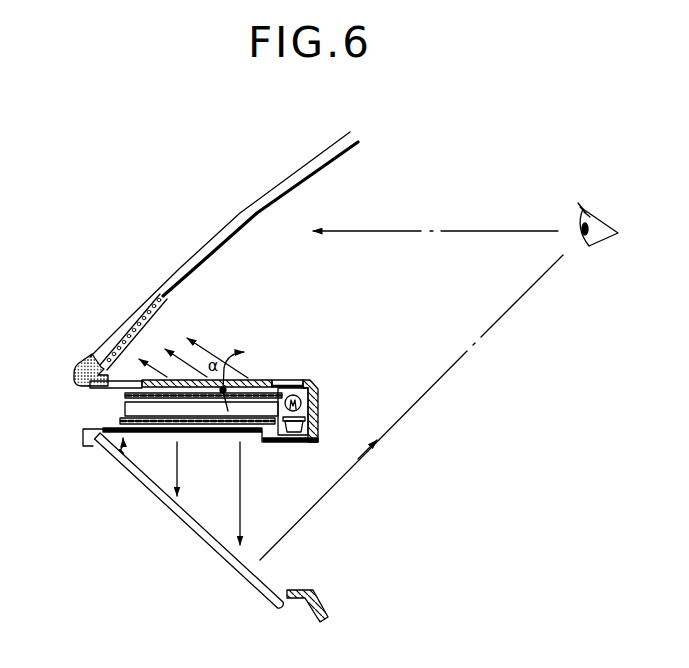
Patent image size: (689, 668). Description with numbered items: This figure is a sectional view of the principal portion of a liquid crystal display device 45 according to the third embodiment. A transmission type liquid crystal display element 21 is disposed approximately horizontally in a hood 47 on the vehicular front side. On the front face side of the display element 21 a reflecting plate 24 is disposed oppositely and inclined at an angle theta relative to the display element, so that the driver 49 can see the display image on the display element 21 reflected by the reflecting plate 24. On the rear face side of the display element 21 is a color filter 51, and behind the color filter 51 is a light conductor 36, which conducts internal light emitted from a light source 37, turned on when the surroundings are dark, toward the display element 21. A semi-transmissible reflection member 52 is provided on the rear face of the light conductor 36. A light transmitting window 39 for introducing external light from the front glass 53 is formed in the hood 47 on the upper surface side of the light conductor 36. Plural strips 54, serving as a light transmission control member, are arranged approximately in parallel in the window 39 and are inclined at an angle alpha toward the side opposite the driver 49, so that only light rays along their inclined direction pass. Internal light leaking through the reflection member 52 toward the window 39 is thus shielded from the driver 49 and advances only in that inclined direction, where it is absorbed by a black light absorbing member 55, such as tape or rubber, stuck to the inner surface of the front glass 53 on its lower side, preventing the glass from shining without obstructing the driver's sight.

The transmission type liquid crystal display element 21 is at (152, 437).
The reflecting plate 24 is at (203, 546).
The light conductor 36 is at (132, 405).
The light source 37 is at (318, 393).
The light transmitting window 39 is at (105, 358).
The device 45 is at (229, 335).
The hood 47 is at (310, 380).
The driver 49 is at (608, 226).
The color filter 51 is at (252, 421).
The semi-transmissible reflection member 52 is at (125, 396).
The front glass 53 is at (238, 214).
The strips 54 is at (238, 380).
The light absorbing member 55 is at (160, 300).